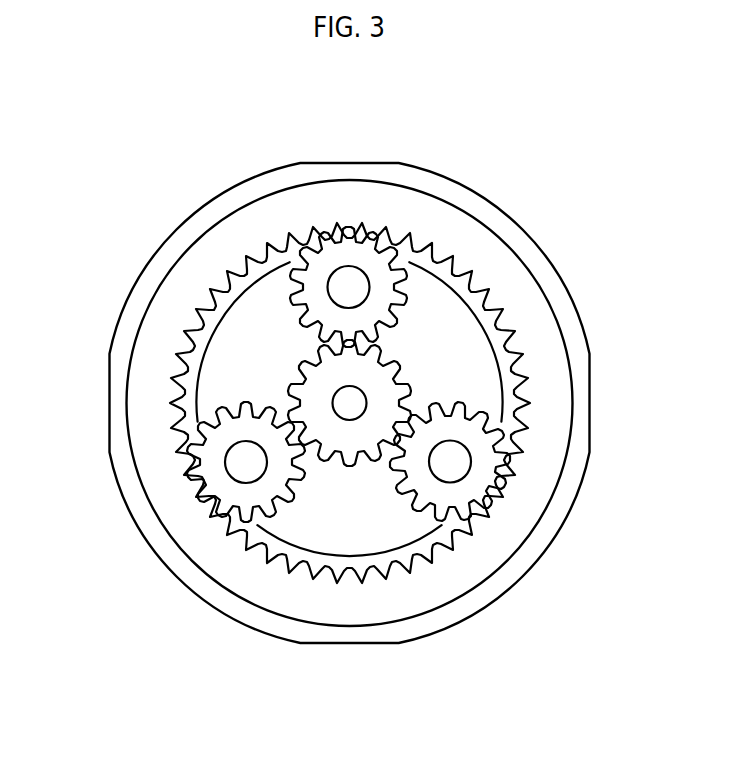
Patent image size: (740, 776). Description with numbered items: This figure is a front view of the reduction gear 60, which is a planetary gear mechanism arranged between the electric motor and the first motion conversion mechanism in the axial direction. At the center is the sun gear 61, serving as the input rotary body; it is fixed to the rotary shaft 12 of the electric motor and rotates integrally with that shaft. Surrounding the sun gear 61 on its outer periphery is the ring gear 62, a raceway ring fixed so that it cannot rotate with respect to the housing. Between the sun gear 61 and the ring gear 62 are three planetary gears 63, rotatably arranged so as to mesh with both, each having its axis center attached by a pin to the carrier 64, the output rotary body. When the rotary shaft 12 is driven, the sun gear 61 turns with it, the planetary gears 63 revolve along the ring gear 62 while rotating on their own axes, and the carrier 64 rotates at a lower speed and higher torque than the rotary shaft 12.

The rotary shaft 12 is at (353, 397).
The reduction gear 60 is at (510, 188).
The sun gear 61 is at (350, 448).
The ring gear 62 is at (533, 307).
The planetary gears 63 is at (298, 250).
The carrier 64 is at (232, 368).